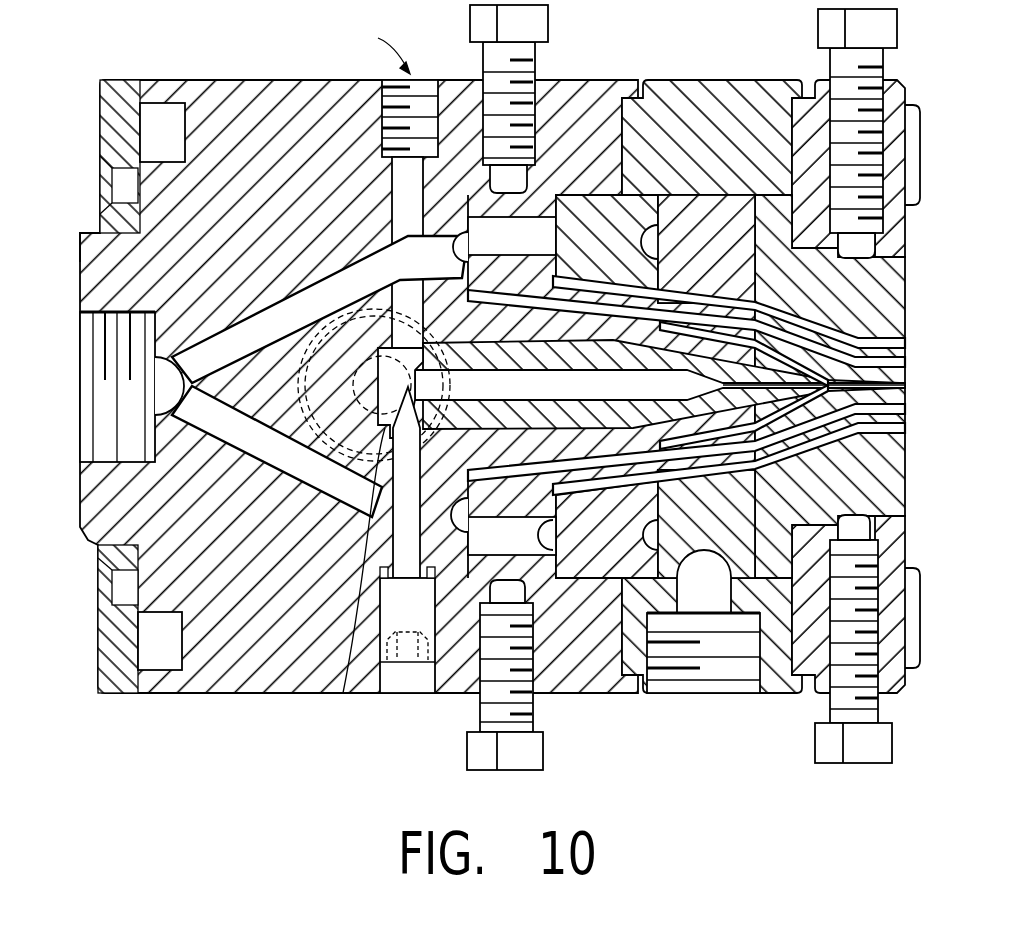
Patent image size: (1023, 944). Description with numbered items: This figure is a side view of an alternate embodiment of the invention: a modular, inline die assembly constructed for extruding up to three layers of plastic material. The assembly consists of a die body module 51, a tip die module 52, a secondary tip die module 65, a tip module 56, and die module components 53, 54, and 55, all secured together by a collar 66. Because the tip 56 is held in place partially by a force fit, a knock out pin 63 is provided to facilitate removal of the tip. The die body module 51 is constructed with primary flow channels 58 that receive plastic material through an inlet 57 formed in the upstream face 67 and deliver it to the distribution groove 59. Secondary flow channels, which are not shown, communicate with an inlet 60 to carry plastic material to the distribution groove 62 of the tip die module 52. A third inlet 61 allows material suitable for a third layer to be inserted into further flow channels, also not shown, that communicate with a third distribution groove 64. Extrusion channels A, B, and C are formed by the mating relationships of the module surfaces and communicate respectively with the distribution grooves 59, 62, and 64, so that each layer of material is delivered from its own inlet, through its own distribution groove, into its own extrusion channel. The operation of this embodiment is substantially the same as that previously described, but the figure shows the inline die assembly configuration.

The die body module 51 is at (268, 68).
The tip die module 52 is at (537, 250).
The die module component 53 is at (717, 83).
The die module component 54 is at (737, 200).
The die module component 55 is at (890, 292).
The tip module 56 is at (590, 405).
The inlet 57 is at (92, 412).
The primary flow channels 58 is at (268, 349).
The distribution groove 59 is at (427, 428).
The inlet 60 is at (355, 400).
The third inlet 61 is at (728, 680).
The distribution groove 62 is at (548, 537).
The knock out pin 63 is at (383, 620).
The third distribution groove 64 is at (642, 525).
The secondary tip die module 65 is at (625, 198).
The collar 66 is at (907, 93).
The upstream face 67 is at (80, 262).
The extrusion channel A is at (905, 372).
The extrusion channel B is at (835, 333).
The extrusion channel C is at (893, 465).